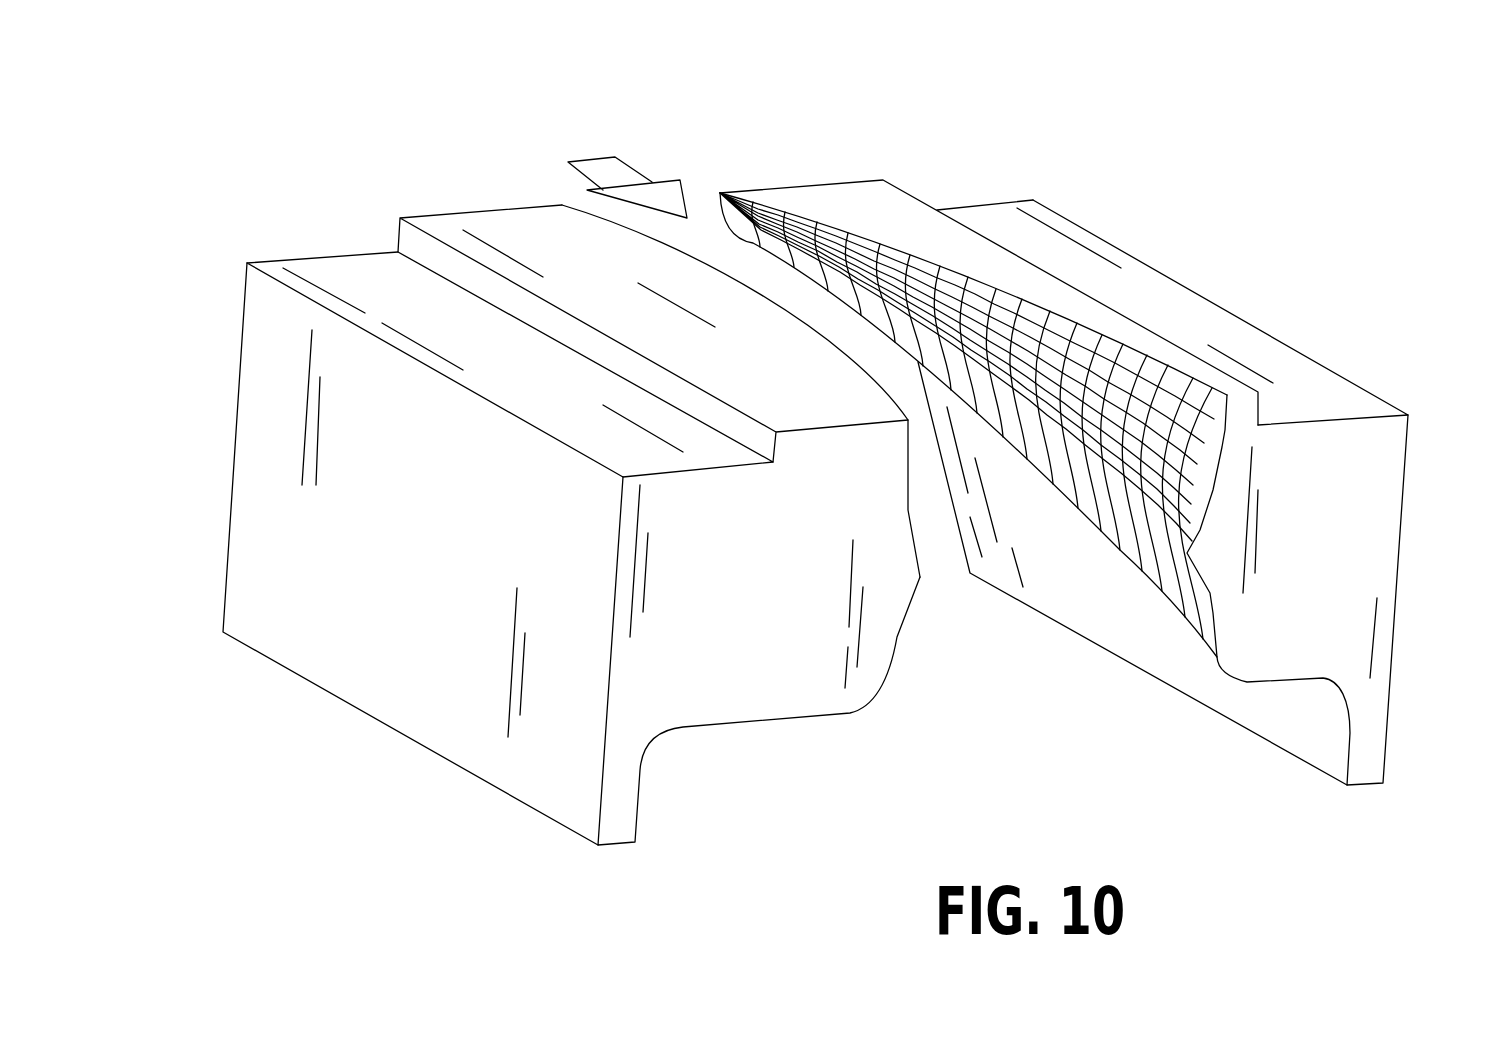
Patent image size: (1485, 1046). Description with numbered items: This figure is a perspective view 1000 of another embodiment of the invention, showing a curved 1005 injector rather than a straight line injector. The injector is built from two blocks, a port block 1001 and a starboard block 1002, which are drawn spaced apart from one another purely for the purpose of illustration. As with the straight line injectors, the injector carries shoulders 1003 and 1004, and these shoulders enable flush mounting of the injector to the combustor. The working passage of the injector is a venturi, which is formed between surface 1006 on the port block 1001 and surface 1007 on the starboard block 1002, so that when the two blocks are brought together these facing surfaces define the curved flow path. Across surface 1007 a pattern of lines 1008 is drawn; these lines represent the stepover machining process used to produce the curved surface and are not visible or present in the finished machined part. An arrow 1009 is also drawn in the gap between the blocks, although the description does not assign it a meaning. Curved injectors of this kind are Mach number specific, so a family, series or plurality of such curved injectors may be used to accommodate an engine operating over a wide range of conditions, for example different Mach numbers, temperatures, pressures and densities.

The perspective view 1000 is at (960, 150).
The port block 1001 is at (525, 235).
The starboard block 1002 is at (862, 202).
The shoulder 1003 is at (1183, 317).
The shoulder 1004 is at (375, 278).
The curved injector 1005 is at (748, 278).
The surface 1006 is at (920, 577).
The surface 1007 is at (1193, 553).
The lines 1008 is at (1167, 403).
The direction arrow 1009 is at (640, 167).